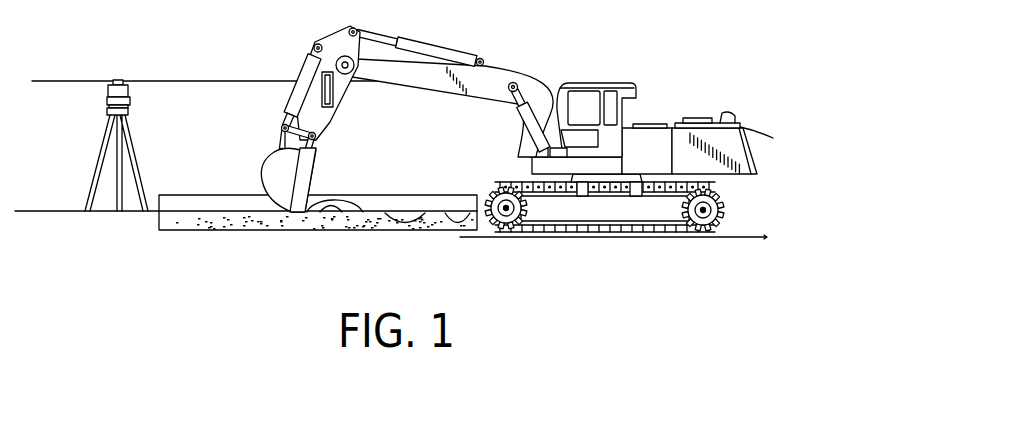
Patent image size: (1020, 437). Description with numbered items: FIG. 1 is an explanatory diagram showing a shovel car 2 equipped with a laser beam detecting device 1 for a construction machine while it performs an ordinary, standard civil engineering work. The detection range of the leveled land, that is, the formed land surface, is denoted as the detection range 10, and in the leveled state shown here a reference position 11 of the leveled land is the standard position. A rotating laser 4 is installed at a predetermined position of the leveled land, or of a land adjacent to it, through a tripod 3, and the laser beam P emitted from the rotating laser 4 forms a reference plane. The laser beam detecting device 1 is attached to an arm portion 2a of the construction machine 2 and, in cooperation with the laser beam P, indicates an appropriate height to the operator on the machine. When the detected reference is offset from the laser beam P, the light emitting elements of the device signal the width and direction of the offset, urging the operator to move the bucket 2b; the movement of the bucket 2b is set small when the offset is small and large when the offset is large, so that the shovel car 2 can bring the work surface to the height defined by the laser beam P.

The laser beam detecting device 1 is at (333, 95).
The shovel car 2 is at (478, 116).
The arm portion 2a is at (315, 125).
The bucket 2b is at (273, 178).
The tripod 3 is at (137, 138).
The rotating laser 4 is at (107, 99).
The detection range of leveled land 10 is at (210, 231).
The reference position 11 is at (338, 212).
The laser beam P is at (233, 82).